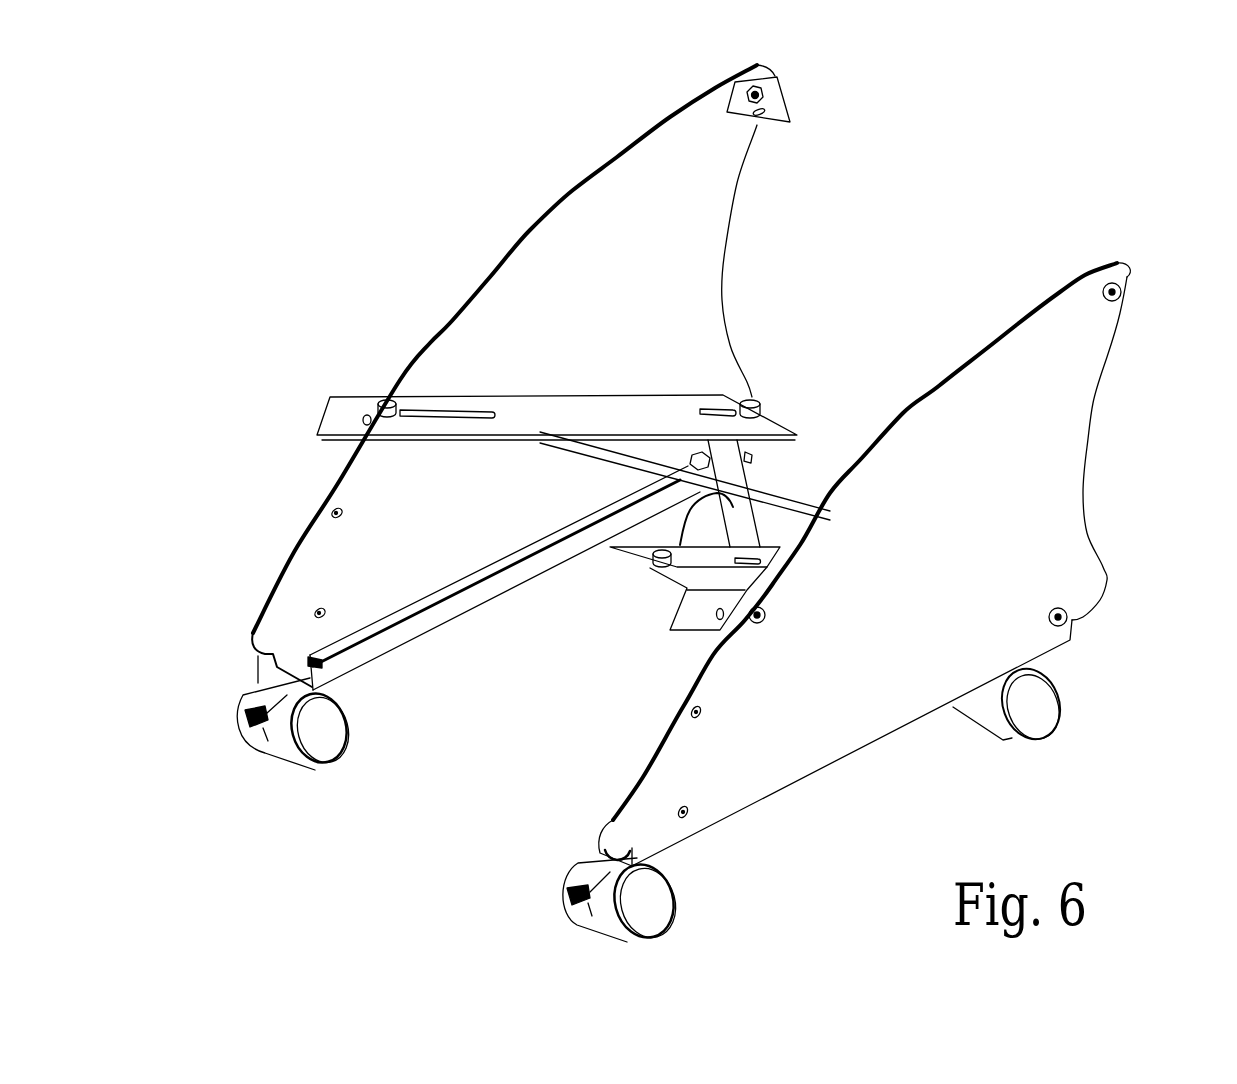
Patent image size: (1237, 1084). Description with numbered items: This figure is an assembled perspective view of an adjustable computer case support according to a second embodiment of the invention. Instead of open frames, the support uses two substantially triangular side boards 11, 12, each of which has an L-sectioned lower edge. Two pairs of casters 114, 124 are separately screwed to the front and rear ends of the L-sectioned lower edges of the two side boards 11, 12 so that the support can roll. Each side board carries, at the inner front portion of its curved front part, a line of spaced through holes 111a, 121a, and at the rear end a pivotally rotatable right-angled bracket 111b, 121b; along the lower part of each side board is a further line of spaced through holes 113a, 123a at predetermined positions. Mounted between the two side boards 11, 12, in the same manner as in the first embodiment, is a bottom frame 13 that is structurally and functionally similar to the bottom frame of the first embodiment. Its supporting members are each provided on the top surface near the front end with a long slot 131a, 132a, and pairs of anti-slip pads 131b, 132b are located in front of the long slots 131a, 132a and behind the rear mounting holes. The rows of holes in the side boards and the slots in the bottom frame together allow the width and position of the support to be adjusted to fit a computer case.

The side board 11 is at (460, 257).
The through holes 111a is at (333, 510).
The right-angled bracket 111b is at (777, 112).
The through holes 113a is at (317, 610).
The casters 114 is at (325, 740).
The side board 12 is at (1100, 493).
The through holes 121a is at (701, 713).
The right-angled bracket 121b is at (1058, 292).
The through holes 123a is at (688, 815).
The casters 124 is at (643, 907).
The bottom frame 13 is at (833, 462).
The long slot 131a is at (437, 413).
The anti-slip pads 131b is at (755, 404).
The long slot 132a is at (722, 562).
The anti-slip pads 132b is at (654, 569).